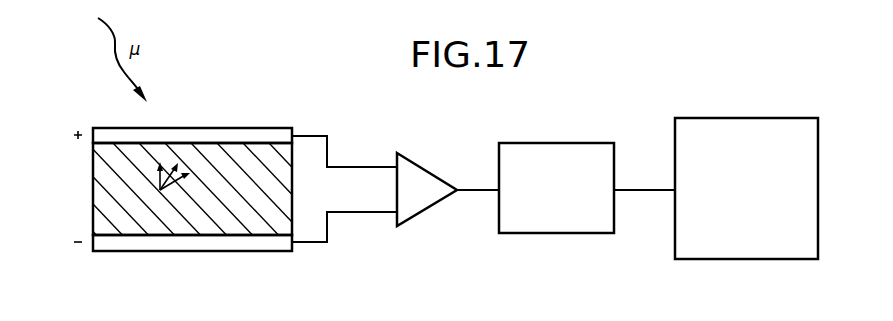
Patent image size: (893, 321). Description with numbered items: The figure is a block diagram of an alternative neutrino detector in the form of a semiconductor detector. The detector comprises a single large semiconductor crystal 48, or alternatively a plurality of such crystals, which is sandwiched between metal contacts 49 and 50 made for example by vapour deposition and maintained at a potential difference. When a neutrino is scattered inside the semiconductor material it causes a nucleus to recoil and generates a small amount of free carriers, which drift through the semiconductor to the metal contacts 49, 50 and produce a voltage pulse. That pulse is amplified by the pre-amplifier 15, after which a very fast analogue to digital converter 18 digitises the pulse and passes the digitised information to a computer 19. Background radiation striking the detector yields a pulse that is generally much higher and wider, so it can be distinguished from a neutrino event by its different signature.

The pre-amplifier 15 is at (417, 217).
The analogue to digital converter 18 is at (557, 233).
The computer 19 is at (739, 259).
The semiconductor crystal 48 is at (92, 184).
The metal contact 49 is at (222, 128).
The metal contact 50 is at (180, 251).